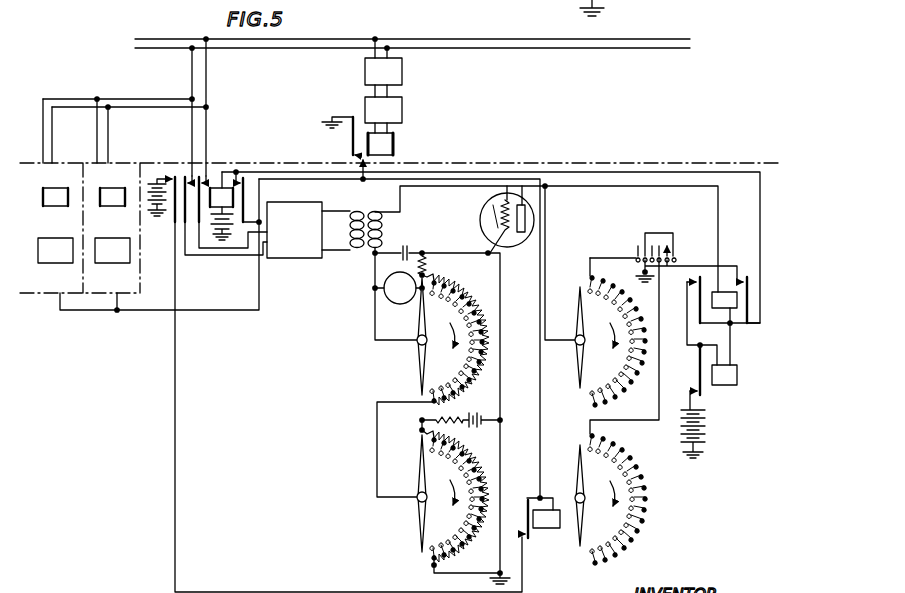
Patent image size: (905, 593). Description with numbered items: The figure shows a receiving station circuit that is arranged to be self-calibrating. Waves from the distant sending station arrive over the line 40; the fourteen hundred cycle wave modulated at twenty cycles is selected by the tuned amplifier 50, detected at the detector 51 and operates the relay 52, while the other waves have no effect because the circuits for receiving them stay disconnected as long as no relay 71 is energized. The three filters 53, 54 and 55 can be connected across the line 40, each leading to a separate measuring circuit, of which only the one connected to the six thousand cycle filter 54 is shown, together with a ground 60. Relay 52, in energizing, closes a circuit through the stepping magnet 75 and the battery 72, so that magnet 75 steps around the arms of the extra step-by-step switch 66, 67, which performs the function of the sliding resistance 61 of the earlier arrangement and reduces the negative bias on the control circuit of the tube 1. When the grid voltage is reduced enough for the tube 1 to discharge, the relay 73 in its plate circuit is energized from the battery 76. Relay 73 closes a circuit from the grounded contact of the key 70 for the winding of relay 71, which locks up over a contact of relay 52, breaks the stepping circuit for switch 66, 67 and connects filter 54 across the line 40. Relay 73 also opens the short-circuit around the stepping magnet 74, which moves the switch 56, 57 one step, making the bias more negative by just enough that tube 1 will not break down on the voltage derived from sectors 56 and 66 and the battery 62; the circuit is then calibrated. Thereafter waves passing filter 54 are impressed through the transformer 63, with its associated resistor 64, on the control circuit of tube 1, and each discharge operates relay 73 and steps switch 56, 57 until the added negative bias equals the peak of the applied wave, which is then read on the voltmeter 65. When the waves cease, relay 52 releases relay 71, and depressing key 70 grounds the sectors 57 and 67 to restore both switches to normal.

The tube 1 is at (518, 250).
The line 40 is at (526, 62).
The tuned amplifier 50 is at (402, 71).
The detector 51 is at (402, 111).
The relay 52 is at (393, 144).
The filter 53 is at (101, 264).
The 6000 cycle filter 54 is at (300, 259).
The filter 55 is at (44, 264).
The switch sector 56 is at (453, 339).
The switch sector 57 is at (596, 296).
The ground 60 is at (626, 3).
The sliding resistance 61 is at (466, 452).
The battery 62 is at (479, 410).
The transformer 63 is at (366, 256).
The resistor 64 is at (455, 284).
The voltmeter 65 is at (404, 304).
The switch sector 66 is at (458, 500).
The switch sector 67 is at (617, 411).
The key 70 is at (673, 228).
The relay 71 is at (63, 180).
The battery 72 is at (153, 178).
The relay 73 is at (737, 302).
The stepping magnet 74 is at (733, 385).
The stepping magnet 75 is at (548, 531).
The battery 76 is at (712, 424).